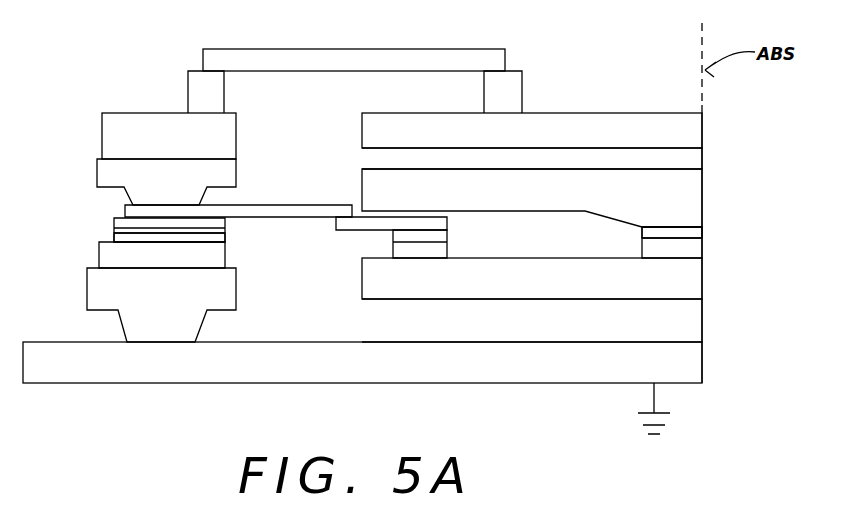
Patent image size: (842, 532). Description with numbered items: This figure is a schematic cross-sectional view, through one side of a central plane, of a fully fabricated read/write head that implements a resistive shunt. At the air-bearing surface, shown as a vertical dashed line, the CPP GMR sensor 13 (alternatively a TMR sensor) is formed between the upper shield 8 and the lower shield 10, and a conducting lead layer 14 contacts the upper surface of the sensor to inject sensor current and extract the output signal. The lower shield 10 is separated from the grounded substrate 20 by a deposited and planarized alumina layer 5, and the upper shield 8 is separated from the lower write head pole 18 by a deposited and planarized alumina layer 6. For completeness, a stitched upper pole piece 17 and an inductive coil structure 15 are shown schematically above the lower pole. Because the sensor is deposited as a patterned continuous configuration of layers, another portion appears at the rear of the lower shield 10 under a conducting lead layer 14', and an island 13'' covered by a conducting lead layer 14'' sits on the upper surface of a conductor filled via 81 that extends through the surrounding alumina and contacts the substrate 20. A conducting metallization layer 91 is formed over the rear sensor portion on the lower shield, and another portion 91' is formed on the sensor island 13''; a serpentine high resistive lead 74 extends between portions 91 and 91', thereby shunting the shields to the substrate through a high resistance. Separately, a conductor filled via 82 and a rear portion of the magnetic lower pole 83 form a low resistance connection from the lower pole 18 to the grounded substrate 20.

The inductive coil structure 15 is at (485, 58).
The stitched upper pole piece 17 is at (514, 86).
The rear portion of the magnetic lower pole 83 is at (118, 134).
The conductor filled via 82 is at (113, 171).
The high resistive lead 74 is at (296, 205).
The portion of conducting metallization layer 91' is at (134, 224).
The sensor island 13'' is at (192, 251).
The conducting lead layer 14'' is at (169, 329).
The conductor filled via 81 is at (103, 280).
The substrate 20 is at (690, 362).
The conducting metallization layer 91 is at (391, 323).
The conducting lead layer 14' is at (420, 329).
The lower write head pole 18 is at (685, 122).
The alumina layer 6 is at (685, 155).
The upper shield 8 is at (685, 200).
The CPP GMR sensor 13 is at (698, 242).
The conducting lead layer 14 is at (647, 233).
The lower shield 10 is at (685, 280).
The alumina layer 5 is at (690, 322).